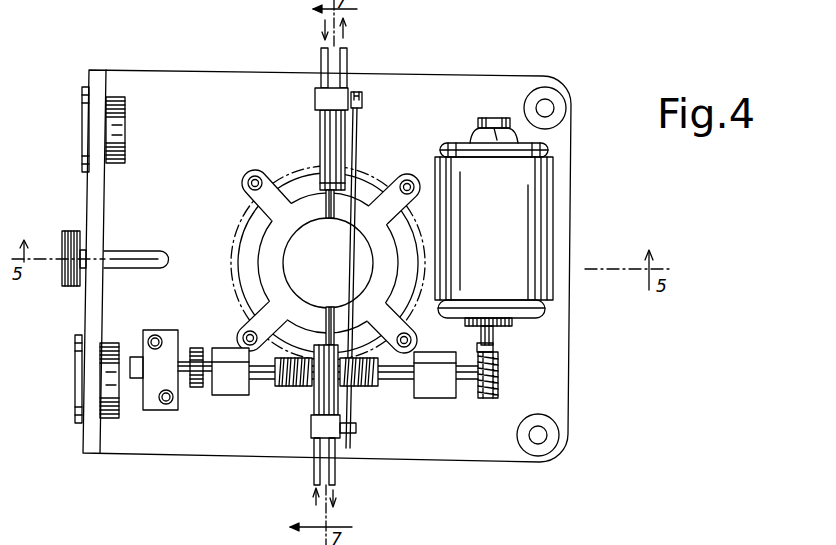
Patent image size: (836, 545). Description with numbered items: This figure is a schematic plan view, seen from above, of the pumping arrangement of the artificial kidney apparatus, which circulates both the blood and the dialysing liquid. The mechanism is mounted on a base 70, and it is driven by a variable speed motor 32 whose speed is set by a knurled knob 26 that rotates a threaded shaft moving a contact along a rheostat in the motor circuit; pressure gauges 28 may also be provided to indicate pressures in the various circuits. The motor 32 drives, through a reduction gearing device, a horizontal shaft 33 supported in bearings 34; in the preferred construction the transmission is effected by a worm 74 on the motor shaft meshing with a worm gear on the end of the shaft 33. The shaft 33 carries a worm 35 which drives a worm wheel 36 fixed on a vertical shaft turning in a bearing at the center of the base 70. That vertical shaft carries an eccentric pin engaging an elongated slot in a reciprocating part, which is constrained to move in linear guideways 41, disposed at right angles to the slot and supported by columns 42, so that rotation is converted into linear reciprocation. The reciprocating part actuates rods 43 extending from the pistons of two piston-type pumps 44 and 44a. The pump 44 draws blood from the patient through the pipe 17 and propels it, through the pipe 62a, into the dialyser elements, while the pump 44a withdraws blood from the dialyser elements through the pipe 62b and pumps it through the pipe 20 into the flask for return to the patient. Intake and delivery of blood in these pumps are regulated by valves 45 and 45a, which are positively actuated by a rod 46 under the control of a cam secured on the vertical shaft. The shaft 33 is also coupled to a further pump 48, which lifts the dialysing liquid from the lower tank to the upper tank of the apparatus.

The pipe 17 is at (320, 60).
The pipe 20 is at (336, 470).
The knurled knob 26 is at (70, 232).
The pressure gauges 28 is at (82, 103).
The variable speed motor 32 is at (545, 188).
The shaft 33 is at (260, 372).
The bearings 34 is at (228, 378).
The worm 35 is at (358, 382).
The worm wheel 36 is at (240, 243).
The linear guideways 41 is at (328, 263).
The columns 42 is at (257, 178).
The rods 43 is at (326, 210).
The pump 44 is at (326, 130).
The pump 44a is at (326, 400).
The valve 45 is at (315, 98).
The valve 45a is at (312, 428).
The rod 46 is at (358, 123).
The pump 48 is at (168, 330).
The pipe 62a is at (402, 64).
The pipe 62b is at (315, 470).
The base 70 is at (571, 240).
The worm 74 is at (498, 372).